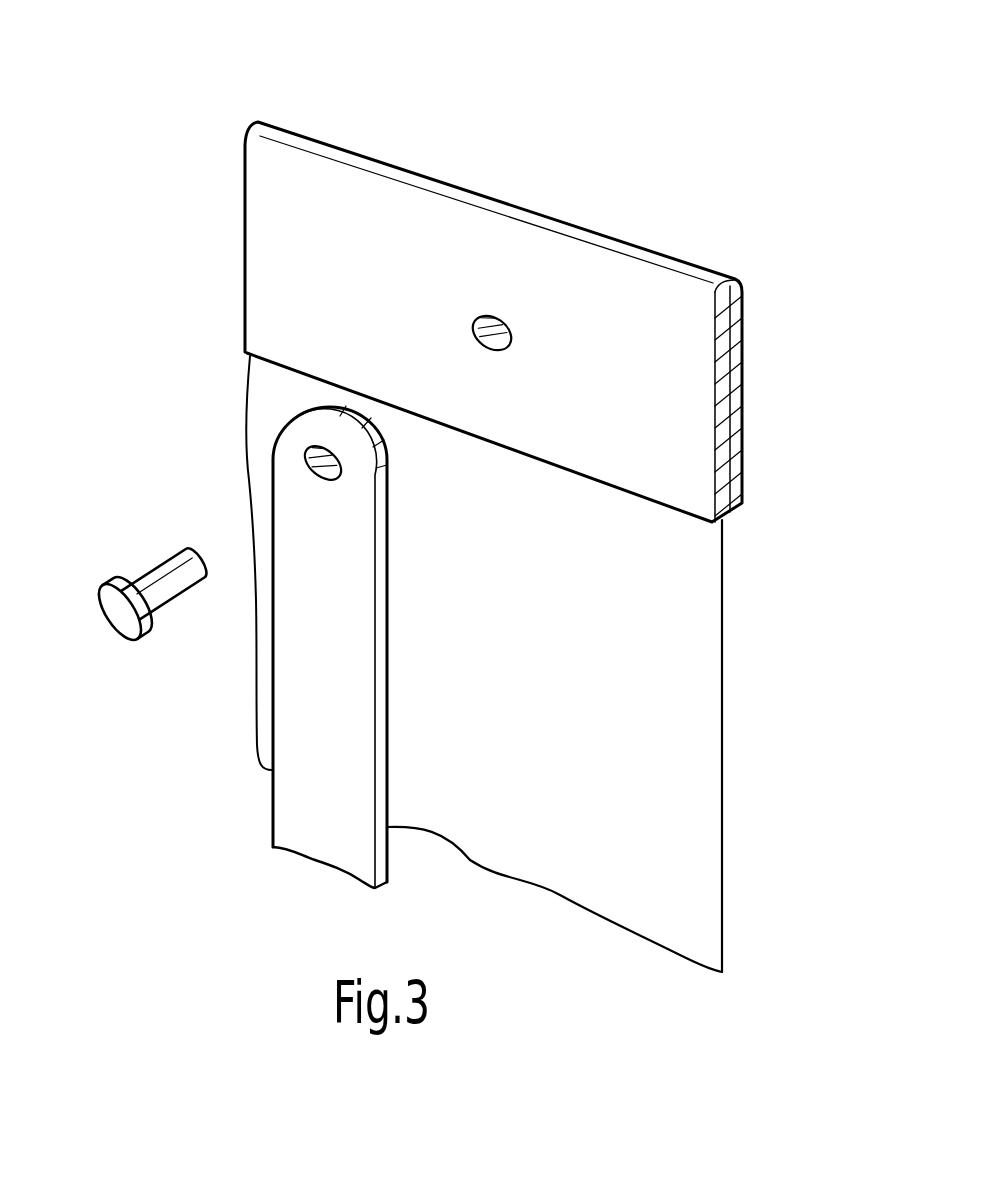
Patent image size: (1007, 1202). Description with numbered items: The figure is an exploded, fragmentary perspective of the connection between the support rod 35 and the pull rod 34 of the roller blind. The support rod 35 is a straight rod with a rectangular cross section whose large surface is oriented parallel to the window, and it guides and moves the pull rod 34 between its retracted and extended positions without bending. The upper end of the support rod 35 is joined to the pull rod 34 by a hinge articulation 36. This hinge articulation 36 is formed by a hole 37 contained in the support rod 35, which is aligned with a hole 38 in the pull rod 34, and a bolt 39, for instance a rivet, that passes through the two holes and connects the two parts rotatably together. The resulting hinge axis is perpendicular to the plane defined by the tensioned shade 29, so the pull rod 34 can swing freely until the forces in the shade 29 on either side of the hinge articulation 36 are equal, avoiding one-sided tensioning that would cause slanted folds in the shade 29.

The hinge articulation 36 is at (147, 197).
The pull rod 34 is at (650, 250).
The hole in pull rod 38 is at (493, 313).
The shade 29 is at (682, 633).
The support rod 35 is at (347, 697).
The hole in support rod 37 is at (335, 480).
The bolt 39 is at (163, 578).